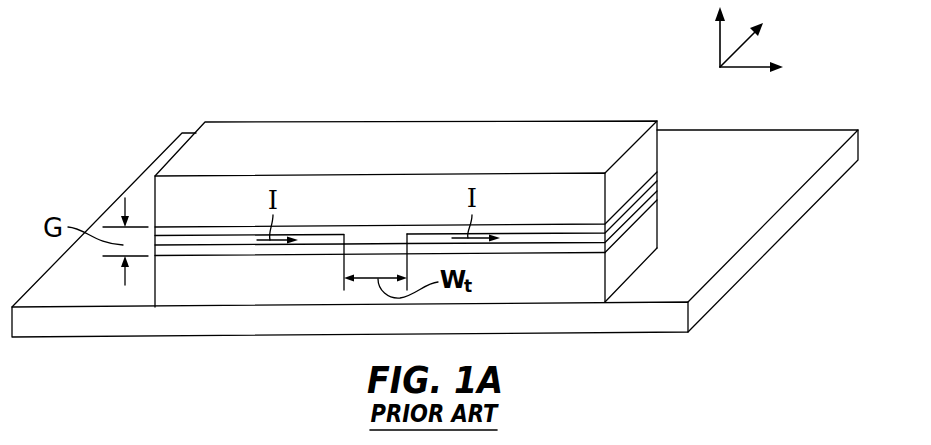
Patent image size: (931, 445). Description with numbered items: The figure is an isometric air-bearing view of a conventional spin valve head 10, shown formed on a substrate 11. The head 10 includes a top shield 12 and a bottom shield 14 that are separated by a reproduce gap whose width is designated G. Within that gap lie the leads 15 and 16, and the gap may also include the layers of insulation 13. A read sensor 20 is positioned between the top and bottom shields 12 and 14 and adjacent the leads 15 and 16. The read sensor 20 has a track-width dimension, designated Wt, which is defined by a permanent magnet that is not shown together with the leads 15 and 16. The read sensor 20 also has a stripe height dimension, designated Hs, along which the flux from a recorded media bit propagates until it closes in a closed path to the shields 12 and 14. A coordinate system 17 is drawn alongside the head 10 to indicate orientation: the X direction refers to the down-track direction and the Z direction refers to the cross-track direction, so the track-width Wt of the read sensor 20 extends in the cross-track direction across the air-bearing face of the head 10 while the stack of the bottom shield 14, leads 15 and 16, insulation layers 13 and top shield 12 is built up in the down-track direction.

The spin valve head 10 is at (409, 94).
The substrate 11 is at (735, 268).
The top shield 12 is at (626, 170).
The layers of insulation 13 is at (517, 226).
The bottom shield 14 is at (618, 267).
The lead 15 is at (205, 244).
The lead 16 is at (575, 238).
The coordinate system 17 is at (747, 69).
The read sensor 20 is at (378, 238).